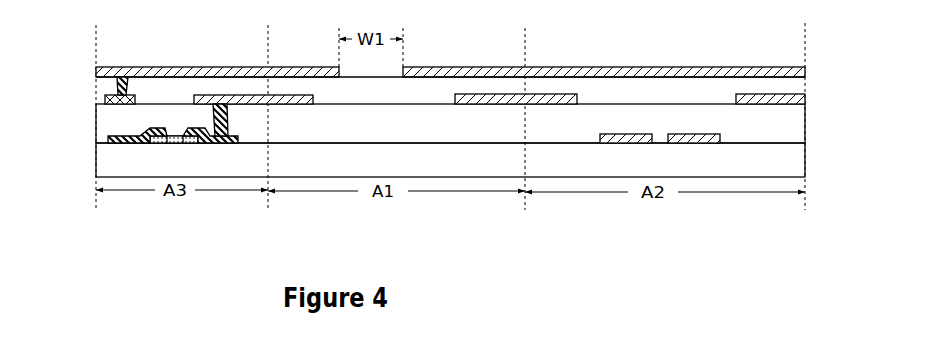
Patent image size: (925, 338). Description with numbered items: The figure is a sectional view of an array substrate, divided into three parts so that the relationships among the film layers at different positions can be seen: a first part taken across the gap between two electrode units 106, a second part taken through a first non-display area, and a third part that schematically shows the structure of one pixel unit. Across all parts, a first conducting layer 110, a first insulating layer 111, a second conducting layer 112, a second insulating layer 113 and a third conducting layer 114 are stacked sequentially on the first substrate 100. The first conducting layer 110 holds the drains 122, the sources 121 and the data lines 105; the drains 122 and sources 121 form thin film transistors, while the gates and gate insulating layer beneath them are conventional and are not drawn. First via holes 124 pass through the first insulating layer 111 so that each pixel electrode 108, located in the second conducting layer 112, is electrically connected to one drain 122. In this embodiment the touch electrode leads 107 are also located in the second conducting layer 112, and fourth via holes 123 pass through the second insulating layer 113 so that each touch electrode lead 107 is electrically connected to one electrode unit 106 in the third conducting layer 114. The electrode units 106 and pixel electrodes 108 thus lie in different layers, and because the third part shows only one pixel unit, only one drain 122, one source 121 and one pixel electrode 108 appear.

The first substrate 100 is at (96, 164).
The first insulating layer 111 is at (96, 121).
The second conducting layer 112 is at (412, 71).
The touch electrode lead 107 is at (120, 99).
The pixel electrode 108 is at (499, 99).
The second insulating layer 113 is at (797, 87).
The third conducting layer 114 is at (450, 51).
The electrode unit 106 is at (583, 69).
The first conducting layer 110 is at (492, 158).
The data line 105 is at (660, 138).
The source 121 is at (173, 135).
The drain 122 is at (203, 143).
The fourth via hole 123 is at (127, 85).
The first via hole 124 is at (230, 121).